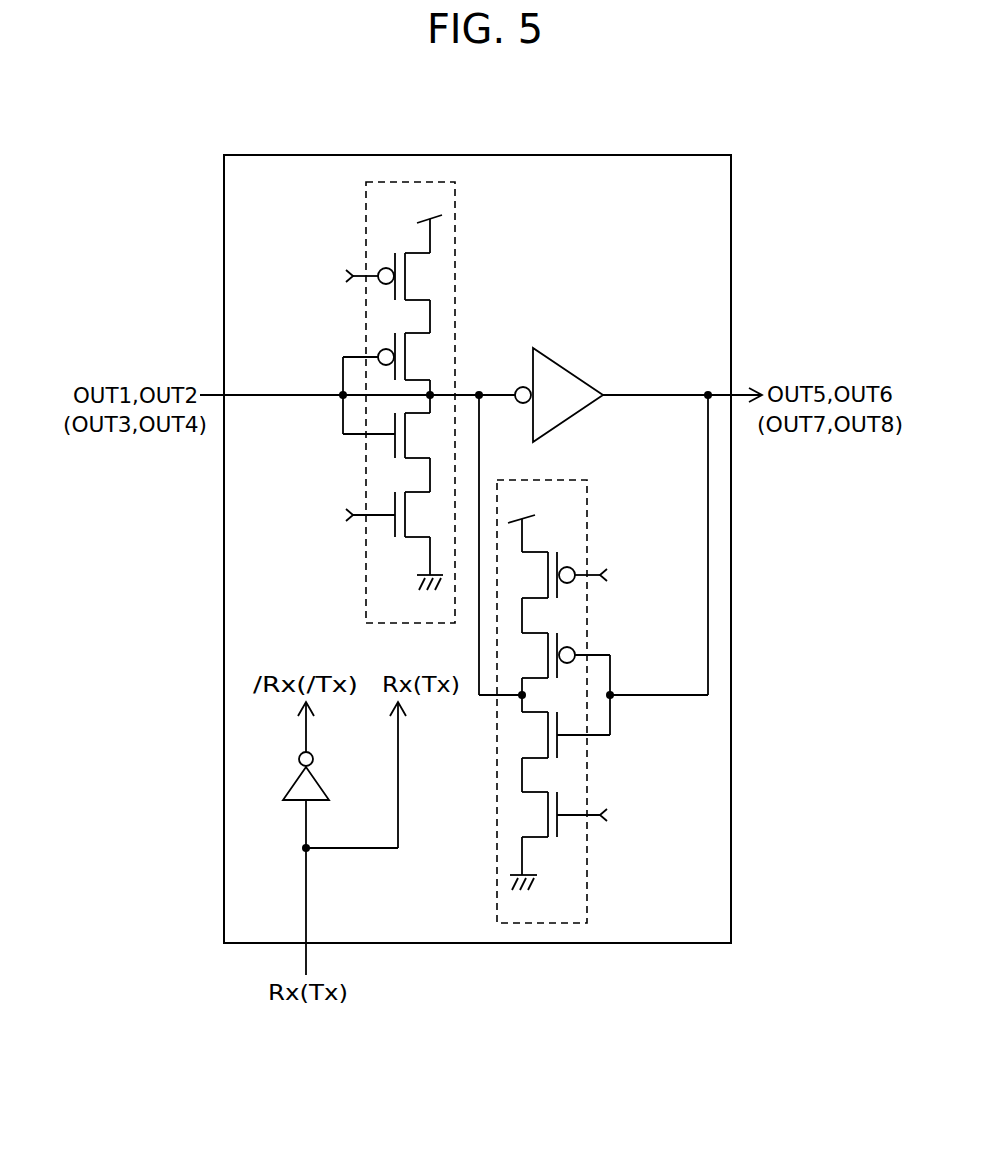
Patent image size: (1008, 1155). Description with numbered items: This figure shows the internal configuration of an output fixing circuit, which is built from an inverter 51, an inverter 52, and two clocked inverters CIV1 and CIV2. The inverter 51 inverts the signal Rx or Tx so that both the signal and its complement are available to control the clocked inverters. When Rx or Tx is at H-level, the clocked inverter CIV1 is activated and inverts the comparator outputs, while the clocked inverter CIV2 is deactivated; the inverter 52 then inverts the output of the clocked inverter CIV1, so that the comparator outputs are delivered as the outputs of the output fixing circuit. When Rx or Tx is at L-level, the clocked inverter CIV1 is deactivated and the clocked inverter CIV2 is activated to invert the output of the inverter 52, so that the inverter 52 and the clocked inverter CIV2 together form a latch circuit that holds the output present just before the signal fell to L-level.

The inverter 51 is at (323, 787).
The inverter 52 is at (573, 372).
The clocked inverter CIV1 is at (455, 261).
The clocked inverter CIV2 is at (497, 782).